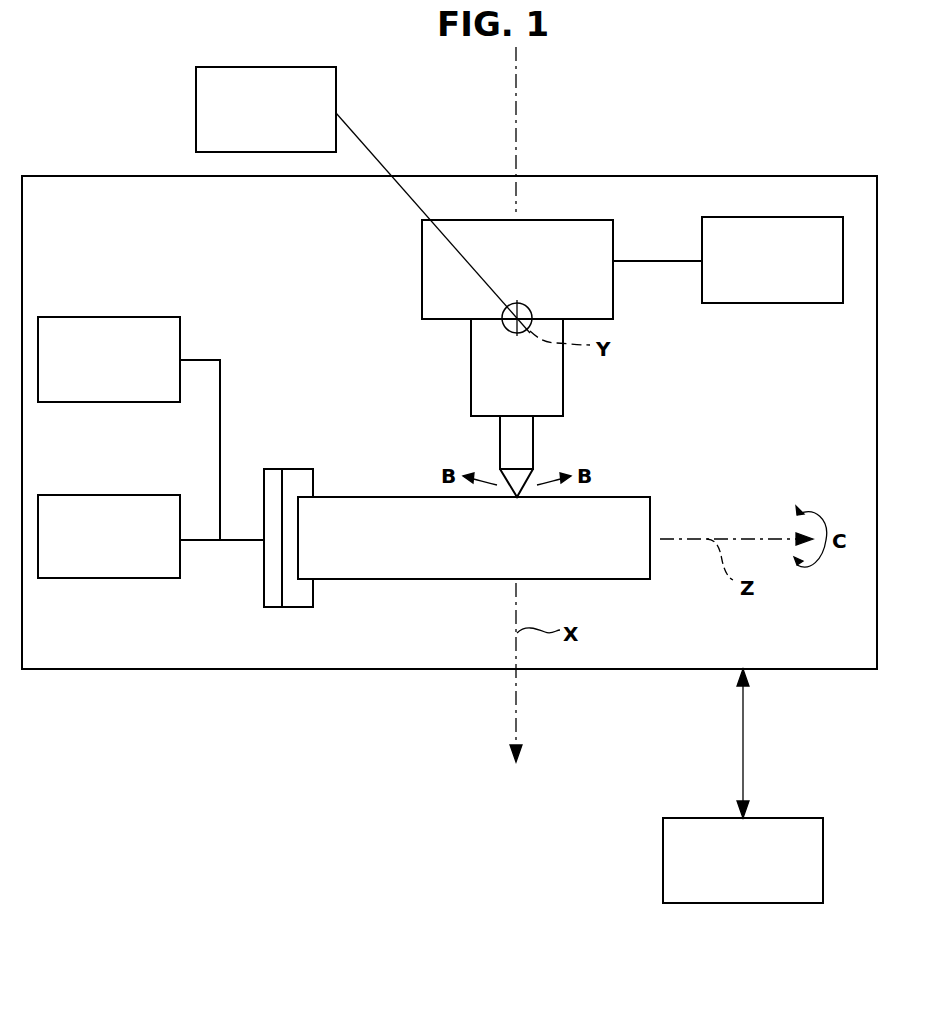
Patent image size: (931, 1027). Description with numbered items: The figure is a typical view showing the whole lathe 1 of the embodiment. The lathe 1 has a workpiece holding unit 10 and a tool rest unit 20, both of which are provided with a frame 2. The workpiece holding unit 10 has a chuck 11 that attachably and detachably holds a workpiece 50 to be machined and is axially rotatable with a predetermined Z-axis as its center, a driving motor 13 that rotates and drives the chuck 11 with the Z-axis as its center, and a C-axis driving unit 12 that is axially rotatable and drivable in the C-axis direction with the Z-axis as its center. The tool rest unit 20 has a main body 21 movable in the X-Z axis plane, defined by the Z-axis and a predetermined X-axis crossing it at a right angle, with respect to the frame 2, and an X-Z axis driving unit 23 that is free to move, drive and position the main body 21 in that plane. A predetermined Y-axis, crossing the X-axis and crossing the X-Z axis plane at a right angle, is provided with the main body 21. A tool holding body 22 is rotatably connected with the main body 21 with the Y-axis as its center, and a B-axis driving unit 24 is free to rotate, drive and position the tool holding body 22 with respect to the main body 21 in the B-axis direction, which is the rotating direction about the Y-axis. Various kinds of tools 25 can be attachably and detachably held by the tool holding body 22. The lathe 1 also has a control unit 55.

The lathe 1 is at (667, 53).
The frame 2 is at (683, 175).
The workpiece holding unit 10 is at (110, 591).
The chuck 11 is at (286, 469).
The C-axis driving unit 12 is at (112, 495).
The driving motor 13 is at (118, 317).
The tool rest unit 20 is at (672, 208).
The main body 21 is at (570, 220).
The tool holding body 22 is at (471, 379).
The X-Z axis driving unit 23 is at (767, 305).
The B-axis driving unit 24 is at (241, 67).
The tool 25 is at (500, 448).
The workpiece 50 is at (650, 567).
The control unit 55 is at (663, 844).